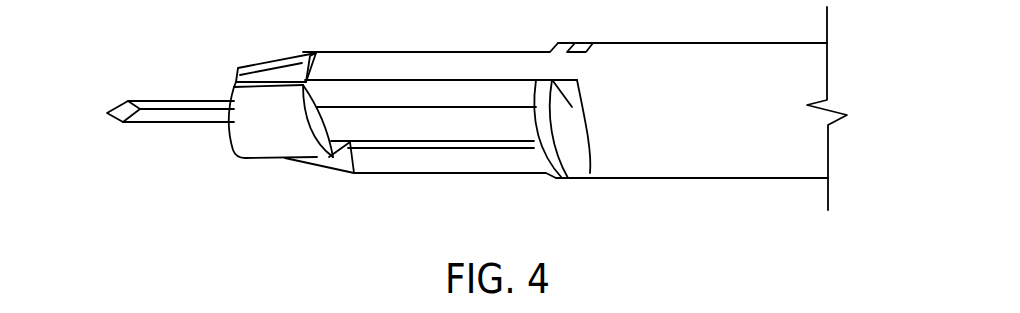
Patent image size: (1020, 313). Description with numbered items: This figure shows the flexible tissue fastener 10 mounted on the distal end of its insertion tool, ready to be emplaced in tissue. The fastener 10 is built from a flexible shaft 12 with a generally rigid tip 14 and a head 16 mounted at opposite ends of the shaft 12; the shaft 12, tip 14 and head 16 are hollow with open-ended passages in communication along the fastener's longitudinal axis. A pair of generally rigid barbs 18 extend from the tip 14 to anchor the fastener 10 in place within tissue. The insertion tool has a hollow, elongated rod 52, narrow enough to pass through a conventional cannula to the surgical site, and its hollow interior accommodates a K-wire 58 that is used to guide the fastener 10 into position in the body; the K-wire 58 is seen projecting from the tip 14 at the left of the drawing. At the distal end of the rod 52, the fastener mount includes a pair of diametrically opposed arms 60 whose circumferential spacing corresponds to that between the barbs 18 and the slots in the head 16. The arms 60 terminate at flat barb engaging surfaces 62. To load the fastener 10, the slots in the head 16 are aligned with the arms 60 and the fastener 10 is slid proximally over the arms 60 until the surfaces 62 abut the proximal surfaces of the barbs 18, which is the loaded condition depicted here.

The flexible tissue fastener 10 is at (231, 152).
The flexible shaft 12 is at (353, 175).
The tip 14 is at (263, 160).
The head 16 is at (578, 167).
The barbs 18 is at (272, 63).
The rod 52 is at (708, 43).
The K-wire 58 is at (168, 99).
The arms 60 is at (422, 60).
The barb engaging surfaces 62 is at (315, 53).